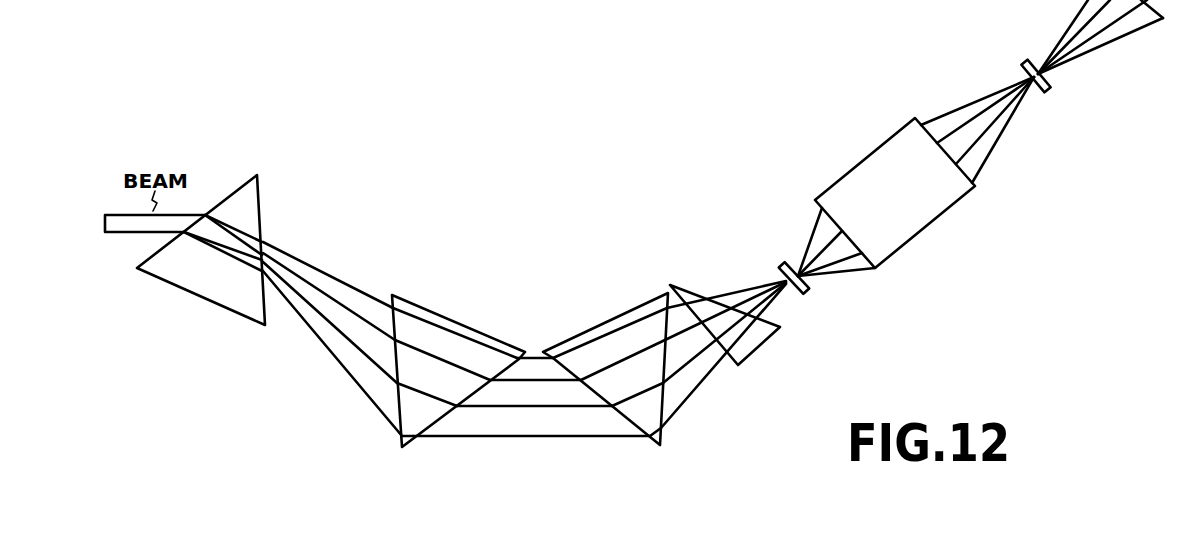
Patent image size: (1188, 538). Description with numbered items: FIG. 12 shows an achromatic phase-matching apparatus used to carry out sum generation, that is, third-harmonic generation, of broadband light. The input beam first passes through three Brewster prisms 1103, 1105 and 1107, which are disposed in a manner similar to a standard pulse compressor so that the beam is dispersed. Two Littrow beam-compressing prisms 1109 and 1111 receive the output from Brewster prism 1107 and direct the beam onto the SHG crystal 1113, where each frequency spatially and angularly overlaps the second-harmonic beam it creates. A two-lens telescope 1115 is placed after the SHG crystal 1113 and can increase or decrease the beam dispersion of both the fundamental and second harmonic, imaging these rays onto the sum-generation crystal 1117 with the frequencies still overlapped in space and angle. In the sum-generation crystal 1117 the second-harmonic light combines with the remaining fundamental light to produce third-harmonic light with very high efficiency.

The Brewster prism 1103 is at (263, 207).
The Brewster prism 1105 is at (445, 312).
The Brewster prism 1107 is at (598, 323).
The Littrow beam-compressing prism 1109 is at (750, 353).
The Littrow beam-compressing prism 1111 is at (777, 276).
The SHG crystal 1113 is at (805, 289).
The two-lens telescope 1115 is at (910, 207).
The sum-generation crystal 1117 is at (1048, 90).